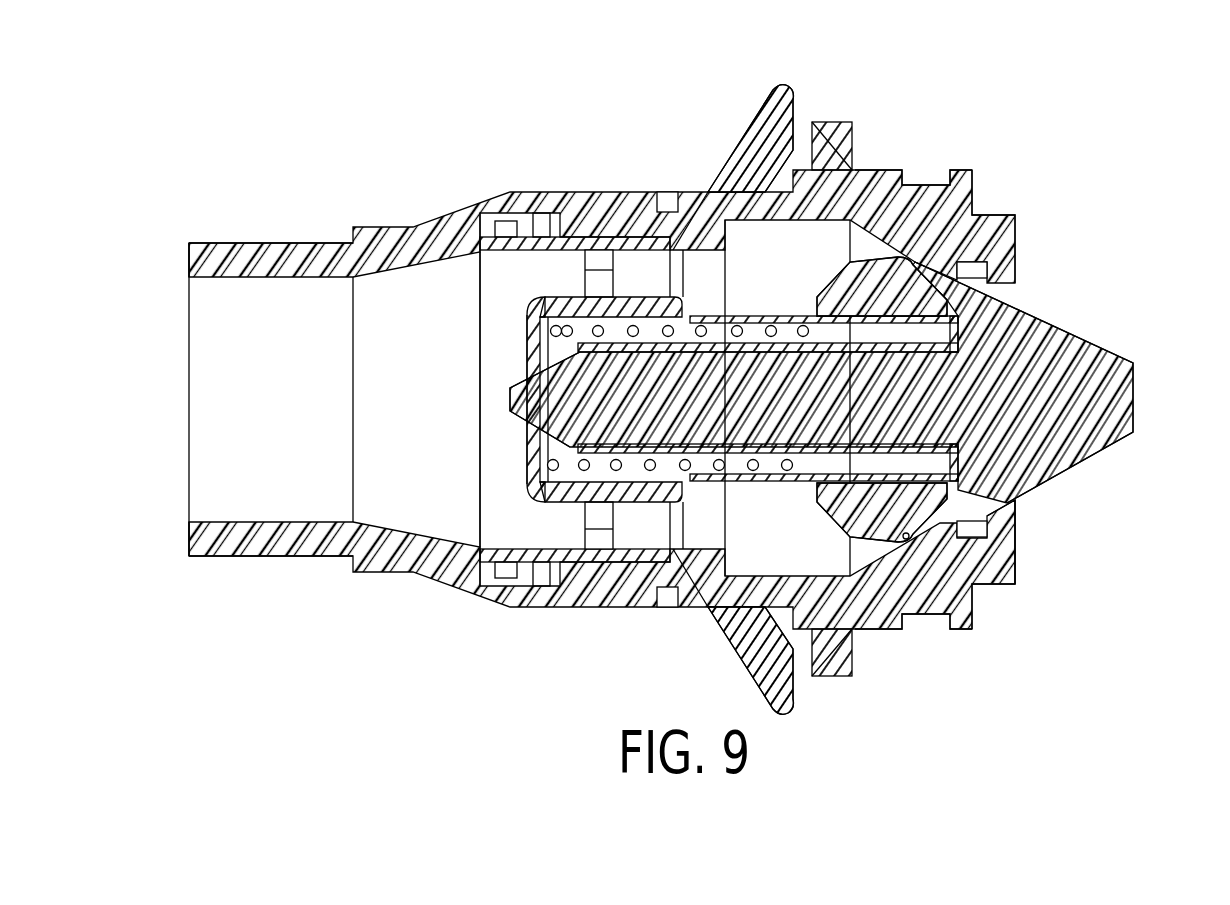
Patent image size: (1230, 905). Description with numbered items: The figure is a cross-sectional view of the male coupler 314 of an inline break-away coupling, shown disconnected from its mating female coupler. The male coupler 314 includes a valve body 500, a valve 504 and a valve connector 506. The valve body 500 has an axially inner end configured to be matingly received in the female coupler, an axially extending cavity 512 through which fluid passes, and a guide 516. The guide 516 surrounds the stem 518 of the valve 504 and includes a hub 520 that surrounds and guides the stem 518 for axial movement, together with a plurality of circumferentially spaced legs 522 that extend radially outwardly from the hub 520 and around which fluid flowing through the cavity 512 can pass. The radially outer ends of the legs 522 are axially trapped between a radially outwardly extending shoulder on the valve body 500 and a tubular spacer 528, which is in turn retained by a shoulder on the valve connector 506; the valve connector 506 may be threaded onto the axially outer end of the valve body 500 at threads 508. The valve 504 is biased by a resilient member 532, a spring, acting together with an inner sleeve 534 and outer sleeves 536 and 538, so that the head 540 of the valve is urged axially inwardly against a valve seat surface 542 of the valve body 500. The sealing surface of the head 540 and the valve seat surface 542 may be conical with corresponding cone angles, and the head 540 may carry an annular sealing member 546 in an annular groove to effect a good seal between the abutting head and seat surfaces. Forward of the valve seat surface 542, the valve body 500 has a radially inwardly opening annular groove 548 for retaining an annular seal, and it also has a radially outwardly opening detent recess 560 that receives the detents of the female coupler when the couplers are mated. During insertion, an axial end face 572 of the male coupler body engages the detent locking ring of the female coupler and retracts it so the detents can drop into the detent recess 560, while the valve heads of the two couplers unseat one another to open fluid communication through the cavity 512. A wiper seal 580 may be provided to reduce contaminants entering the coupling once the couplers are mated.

The male coupler 314 is at (300, 107).
The valve body 500 is at (712, 160).
The valve 504 is at (1100, 345).
The valve connector 506 is at (285, 558).
The threads 508 is at (560, 232).
The cavity 512 is at (700, 612).
The guide 516 is at (525, 493).
The stem 518 is at (520, 405).
The hub 520 is at (548, 305).
The circumferentially spaced legs 522 is at (630, 560).
The tubular spacer 528 is at (484, 262).
The resilient member 532 is at (752, 330).
The inner sleeve 534 is at (770, 465).
The outer sleeve 536 is at (985, 510).
The outer sleeve 538 is at (632, 292).
The head 540 is at (1100, 435).
The valve seat surface 542 is at (935, 298).
The annular sealing member 546 is at (912, 540).
The annular groove 548 is at (1013, 530).
The detent recess 560 is at (915, 195).
The axial end face 572 is at (985, 198).
The wiper seal 580 is at (823, 128).